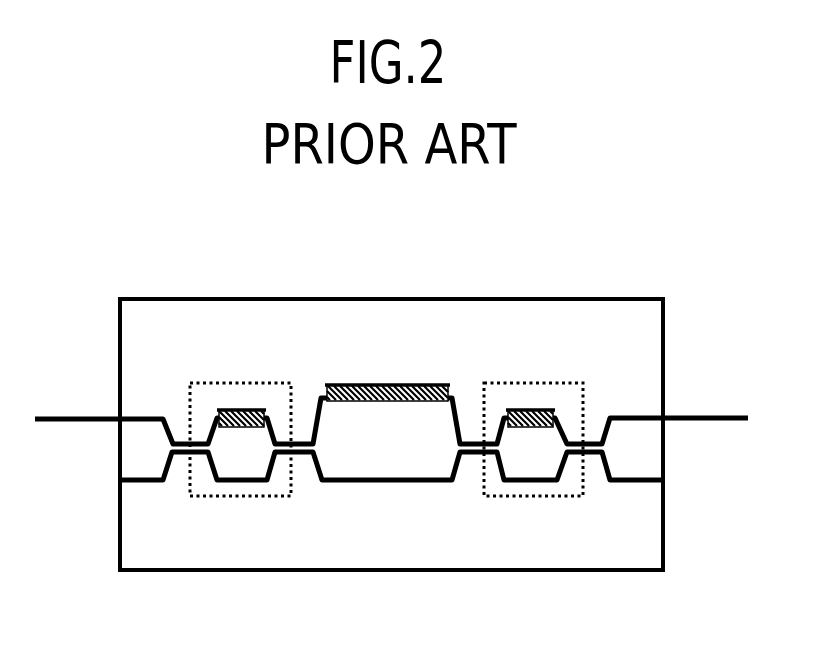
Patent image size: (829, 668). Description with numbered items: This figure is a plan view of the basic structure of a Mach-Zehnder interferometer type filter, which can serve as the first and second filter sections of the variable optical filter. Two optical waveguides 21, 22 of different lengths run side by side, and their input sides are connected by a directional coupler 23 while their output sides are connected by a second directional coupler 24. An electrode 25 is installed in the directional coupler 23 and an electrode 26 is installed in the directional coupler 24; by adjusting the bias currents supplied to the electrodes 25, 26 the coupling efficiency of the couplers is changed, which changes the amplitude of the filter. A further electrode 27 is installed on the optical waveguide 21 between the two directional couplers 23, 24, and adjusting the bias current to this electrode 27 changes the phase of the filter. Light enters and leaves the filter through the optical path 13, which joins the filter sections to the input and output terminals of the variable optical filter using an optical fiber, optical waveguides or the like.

The optical path 13 is at (95, 418).
The optical waveguide 21 is at (315, 412).
The optical waveguide 22 is at (350, 482).
The directional coupler 23 is at (212, 497).
The directional coupler 24 is at (520, 497).
The electrode 25 is at (235, 410).
The electrode 26 is at (533, 410).
The electrode 27 is at (388, 385).